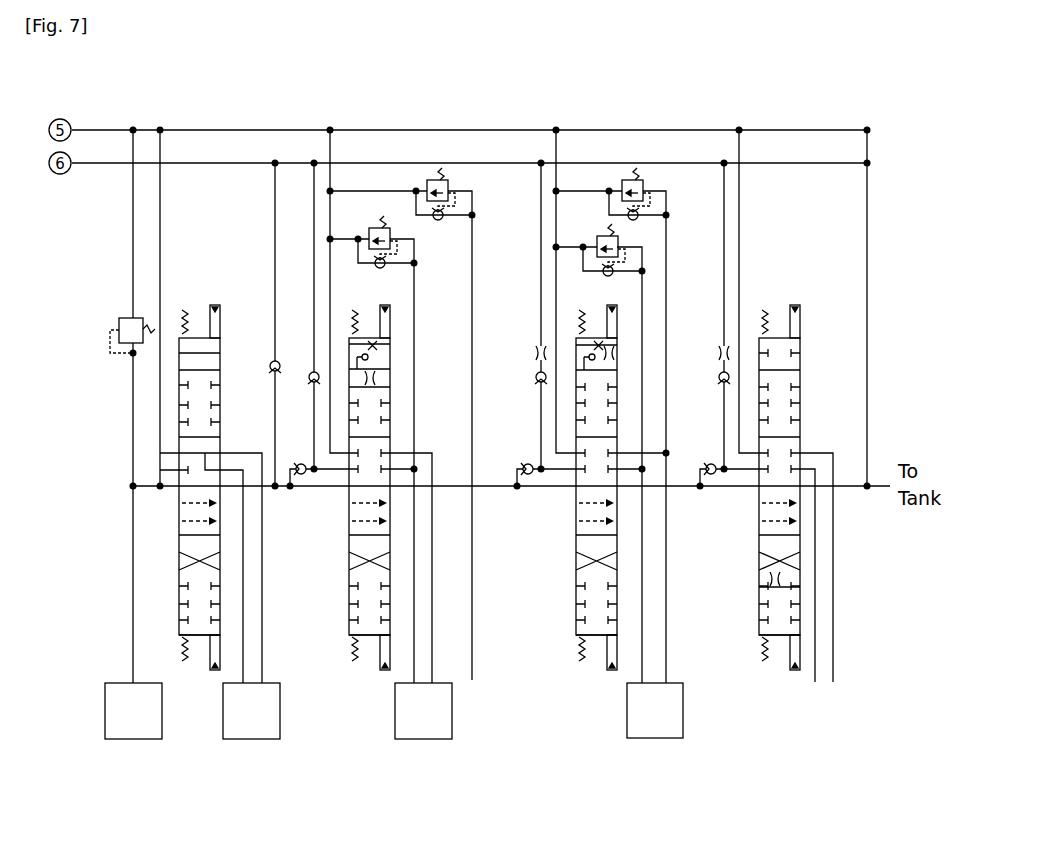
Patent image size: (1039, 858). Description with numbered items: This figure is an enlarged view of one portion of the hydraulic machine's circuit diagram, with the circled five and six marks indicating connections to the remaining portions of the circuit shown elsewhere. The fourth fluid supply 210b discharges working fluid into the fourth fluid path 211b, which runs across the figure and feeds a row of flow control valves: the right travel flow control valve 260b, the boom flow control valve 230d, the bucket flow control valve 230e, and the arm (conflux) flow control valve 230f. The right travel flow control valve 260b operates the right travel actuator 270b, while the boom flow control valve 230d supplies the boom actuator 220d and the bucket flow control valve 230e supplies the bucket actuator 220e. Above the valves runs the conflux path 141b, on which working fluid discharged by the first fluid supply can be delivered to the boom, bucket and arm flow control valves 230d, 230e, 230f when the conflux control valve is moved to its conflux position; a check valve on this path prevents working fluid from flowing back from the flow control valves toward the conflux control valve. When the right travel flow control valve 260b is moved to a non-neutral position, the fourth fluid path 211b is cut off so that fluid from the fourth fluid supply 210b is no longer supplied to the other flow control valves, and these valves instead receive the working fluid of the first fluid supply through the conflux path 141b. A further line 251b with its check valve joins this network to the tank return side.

The conflux path 141b is at (204, 163).
The check valve line 251b is at (275, 238).
The fourth fluid path 211b is at (147, 487).
The right travel flow control valve 260b is at (179, 535).
The boom flow control valve 230d is at (349, 535).
The bucket flow control valve 230e is at (576, 535).
The arm (conflux) flow control valve 230f is at (759, 535).
The fourth fluid supply 210b is at (119, 740).
The right travel actuator 270b is at (250, 740).
The boom actuator 220d is at (423, 740).
The bucket actuator 220e is at (652, 740).